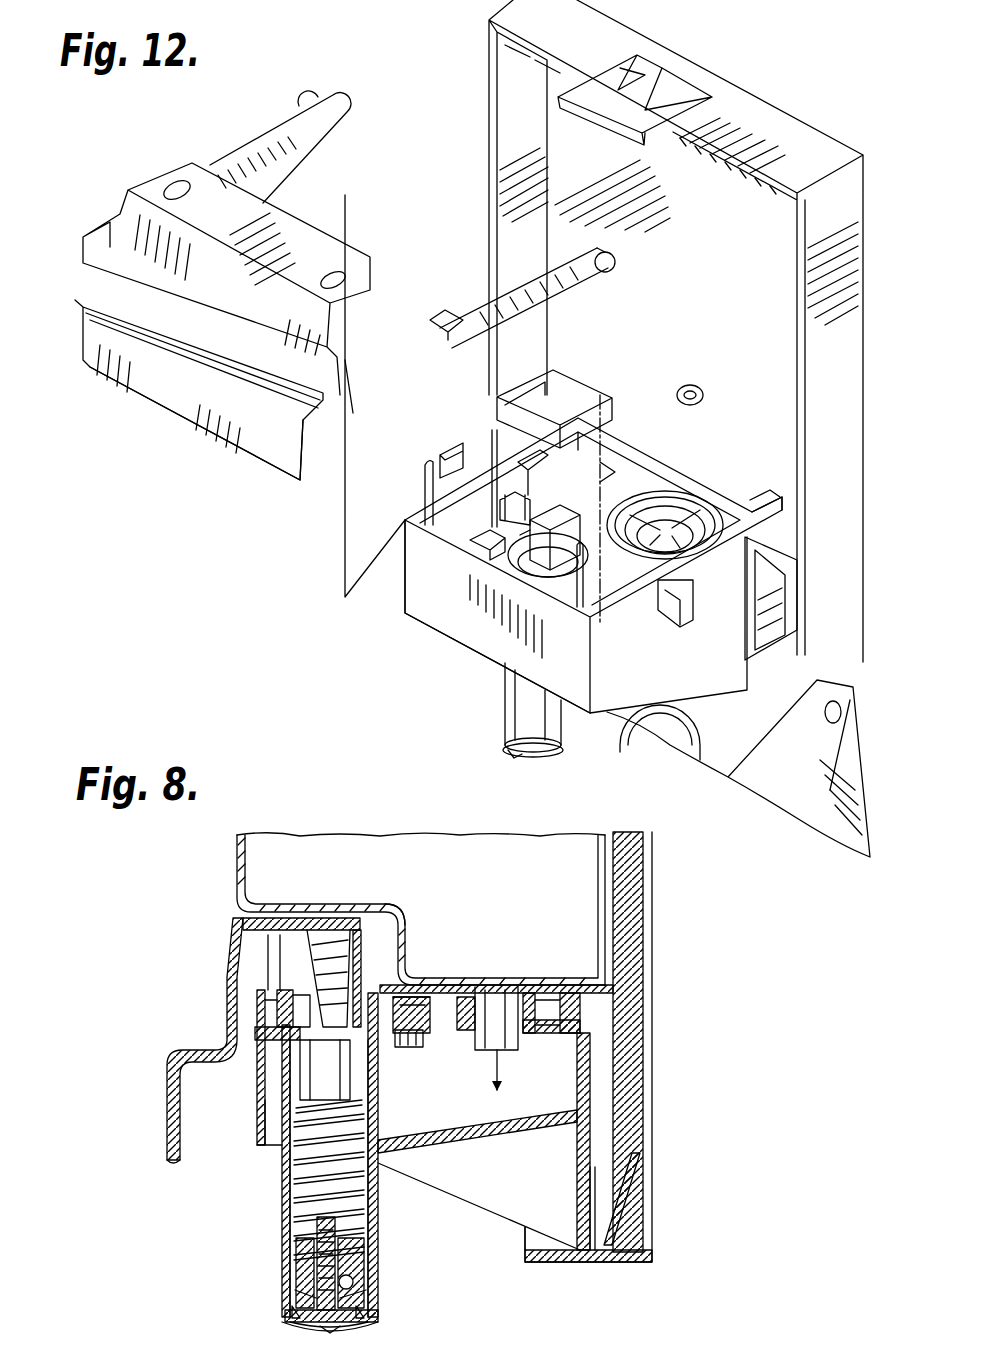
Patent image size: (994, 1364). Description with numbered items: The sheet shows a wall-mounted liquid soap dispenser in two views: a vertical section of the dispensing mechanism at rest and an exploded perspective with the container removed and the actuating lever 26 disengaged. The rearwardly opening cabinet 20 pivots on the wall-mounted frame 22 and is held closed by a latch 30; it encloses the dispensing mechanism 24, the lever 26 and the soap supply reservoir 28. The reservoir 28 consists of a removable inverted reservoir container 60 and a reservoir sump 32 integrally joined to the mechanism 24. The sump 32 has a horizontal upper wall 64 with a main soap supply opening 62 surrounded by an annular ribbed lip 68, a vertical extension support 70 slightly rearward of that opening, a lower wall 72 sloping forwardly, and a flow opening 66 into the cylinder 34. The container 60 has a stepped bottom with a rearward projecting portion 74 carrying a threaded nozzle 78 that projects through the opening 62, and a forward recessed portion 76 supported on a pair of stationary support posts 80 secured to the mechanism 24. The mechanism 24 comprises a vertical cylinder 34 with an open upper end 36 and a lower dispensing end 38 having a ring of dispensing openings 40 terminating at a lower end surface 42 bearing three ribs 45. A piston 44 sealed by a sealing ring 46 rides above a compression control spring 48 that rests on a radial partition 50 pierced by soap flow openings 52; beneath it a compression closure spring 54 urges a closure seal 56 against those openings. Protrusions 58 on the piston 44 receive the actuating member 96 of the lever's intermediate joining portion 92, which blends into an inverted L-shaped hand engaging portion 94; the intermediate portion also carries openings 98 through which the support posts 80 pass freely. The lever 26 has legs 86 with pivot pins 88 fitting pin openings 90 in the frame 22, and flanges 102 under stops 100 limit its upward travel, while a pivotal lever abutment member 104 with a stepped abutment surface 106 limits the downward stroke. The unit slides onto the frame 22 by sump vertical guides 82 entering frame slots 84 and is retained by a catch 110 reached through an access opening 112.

In FIG. 12, the cabinet 20 is at (770, 810).
In FIG. 12, the frame 22 is at (485, 78).
In FIG. 8, the frame 22 is at (655, 935).
In FIG. 12, the dispensing mechanism 24 is at (400, 596).
In FIG. 8, the dispensing mechanism 24 is at (280, 1207).
In FIG. 12, the actuating lever 26 is at (130, 395).
In FIG. 8, the actuating lever 26 is at (150, 1100).
In FIG. 12, the soap supply reservoir 28 is at (752, 507).
In FIG. 8, the soap supply reservoir 28 is at (393, 832).
In FIG. 12, the latch 30 is at (592, 90).
In FIG. 12, the reservoir sump 32 is at (665, 490).
In FIG. 8, the reservoir sump 32 is at (560, 1095).
In FIG. 12, the cylinder 34 is at (505, 720).
In FIG. 8, the cylinder 34 is at (378, 1205).
In FIG. 12, the upper end 36 is at (528, 560).
In FIG. 8, the upper end 36 is at (282, 1000).
In FIG. 12, the lower dispensing end 38 is at (538, 752).
In FIG. 8, the lower dispensing end 38 is at (284, 1319).
In FIG. 8, the dispensing openings 40 is at (295, 1320).
In FIG. 8, the lower end surface 42 is at (378, 1314).
In FIG. 12, the piston 44 is at (540, 575).
In FIG. 8, the piston 44 is at (280, 1080).
In FIG. 12, the ribs 45 is at (514, 754).
In FIG. 8, the ribs 45 is at (328, 1330).
In FIG. 8, the sealing ring 46 is at (255, 1032).
In FIG. 8, the compression control spring 48 is at (296, 1165).
In FIG. 8, the cylinder radial partition 50 is at (316, 1266).
In FIG. 8, the soap flow openings 52 is at (356, 1252).
In FIG. 8, the compression closure spring 54 is at (368, 1295).
In FIG. 8, the closure seal 56 is at (353, 1280).
In FIG. 12, the protrusions 58 is at (505, 495).
In FIG. 8, the protrusions 58 is at (300, 985).
In FIG. 8, the reservoir container 60 is at (523, 870).
In FIG. 12, the main soap supply opening 62 is at (700, 525).
In FIG. 8, the main soap supply opening 62 is at (535, 1045).
In FIG. 12, the upper wall 64 is at (640, 490).
In FIG. 8, the upper wall 64 is at (582, 1028).
In FIG. 8, the flow opening 66 is at (335, 1150).
In FIG. 12, the annular ribbed lip 68 is at (690, 508).
In FIG. 8, the annular ribbed lip 68 is at (580, 1008).
In FIG. 12, the extension support 70 is at (607, 470).
In FIG. 8, the extension support 70 is at (605, 992).
In FIG. 8, the lower wall 72 is at (525, 1135).
In FIG. 8, the rearward projecting portion 74 is at (447, 1005).
In FIG. 8, the forward recessed portion 76 is at (358, 905).
In FIG. 8, the threaded nozzle 78 is at (505, 1010).
In FIG. 12, the support posts 80 is at (424, 472).
In FIG. 8, the support posts 80 is at (266, 950).
In FIG. 12, the sump vertical guides 82 is at (560, 397).
In FIG. 12, the frame slots 84 is at (604, 397).
In FIG. 12, the legs 86 is at (488, 303).
In FIG. 12, the pivot pins 88 is at (300, 100).
In FIG. 12, the pin openings 90 is at (540, 452).
In FIG. 12, the intermediate joining portion 92 is at (130, 206).
In FIG. 8, the intermediate joining portion 92 is at (298, 918).
In FIG. 12, the hand engaging portion 94 is at (82, 305).
In FIG. 8, the hand engaging portion 94 is at (180, 1058).
In FIG. 8, the actuating member 96 is at (392, 990).
In FIG. 12, the hole 98 is at (176, 188).
In FIG. 12, the stops 100 is at (450, 458).
In FIG. 12, the flanges 102 is at (447, 318).
In FIG. 12, the lever abutment member 104 is at (555, 585).
In FIG. 8, the lever abutment member 104 is at (440, 1062).
In FIG. 12, the stepped abutment surface 106 is at (615, 472).
In FIG. 8, the stepped abutment surface 106 is at (412, 997).
In FIG. 8, the catch 110 is at (618, 1200).
In FIG. 8, the access opening 112 is at (590, 1200).